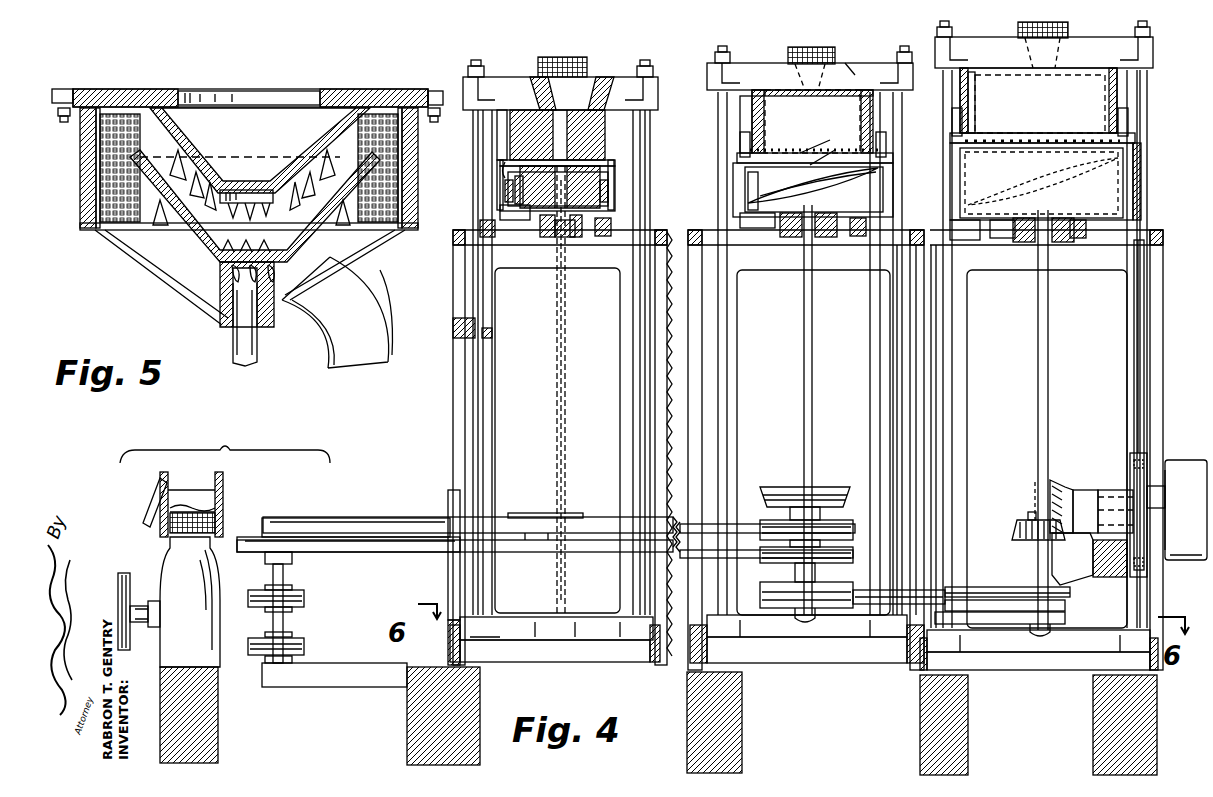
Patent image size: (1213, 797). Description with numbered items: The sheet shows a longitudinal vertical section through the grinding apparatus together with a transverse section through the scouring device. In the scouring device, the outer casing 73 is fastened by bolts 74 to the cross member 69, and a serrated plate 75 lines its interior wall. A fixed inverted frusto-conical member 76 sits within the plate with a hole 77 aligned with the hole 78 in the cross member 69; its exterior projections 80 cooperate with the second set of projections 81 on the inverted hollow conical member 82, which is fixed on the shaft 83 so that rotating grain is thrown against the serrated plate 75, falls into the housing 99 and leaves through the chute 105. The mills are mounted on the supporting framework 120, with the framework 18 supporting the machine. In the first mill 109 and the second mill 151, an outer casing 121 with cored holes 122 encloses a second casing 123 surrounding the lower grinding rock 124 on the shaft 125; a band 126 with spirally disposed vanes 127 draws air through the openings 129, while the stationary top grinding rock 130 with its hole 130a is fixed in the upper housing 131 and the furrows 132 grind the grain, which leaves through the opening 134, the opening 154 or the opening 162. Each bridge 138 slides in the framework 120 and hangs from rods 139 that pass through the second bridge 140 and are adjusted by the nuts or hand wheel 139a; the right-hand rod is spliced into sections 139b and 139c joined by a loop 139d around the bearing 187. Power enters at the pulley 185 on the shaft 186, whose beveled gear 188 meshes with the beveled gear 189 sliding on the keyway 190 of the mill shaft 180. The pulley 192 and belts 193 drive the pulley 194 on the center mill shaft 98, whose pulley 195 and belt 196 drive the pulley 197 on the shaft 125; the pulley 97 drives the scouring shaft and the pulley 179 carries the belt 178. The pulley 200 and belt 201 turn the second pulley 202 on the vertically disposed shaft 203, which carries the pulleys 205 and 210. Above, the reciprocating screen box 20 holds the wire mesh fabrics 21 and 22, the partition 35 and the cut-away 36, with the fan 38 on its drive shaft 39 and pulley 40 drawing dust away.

In FIG. 5, the cross member 69 is at (377, 92).
In FIG. 5, the hole 78 is at (283, 95).
In FIG. 5, the bolts 74 is at (60, 123).
In FIG. 5, the outer casing 73 is at (82, 162).
In FIG. 5, the serrated plate 75 is at (100, 182).
In FIG. 5, the fixed inverted frustrated conical member 76 is at (255, 185).
In FIG. 5, the hole 77 is at (248, 191).
In FIG. 5, the projections 80 is at (168, 175).
In FIG. 5, the second set of projections 81 is at (257, 234).
In FIG. 5, the housing 99 is at (172, 276).
In FIG. 5, the inverted hollow conical member 82 is at (288, 255).
In FIG. 5, the shaft 83 is at (233, 342).
In FIG. 5, the chute 105 is at (366, 280).
In FIG. 4, the supporting framework 120 is at (453, 268).
In FIG. 4, the vertically disposed rods 139 is at (483, 380).
In FIG. 4, the second bridge 140 is at (620, 60).
In FIG. 4, the nuts or hand wheel 139a is at (470, 66).
In FIG. 4, the second mill 151 is at (855, 58).
In FIG. 4, the hole 130a is at (807, 117).
In FIG. 4, the stationary top grinding rock 130 is at (1158, 85).
In FIG. 4, the upper housing 131 is at (730, 114).
In FIG. 4, the openings 129 is at (836, 147).
In FIG. 4, the furrows 132 is at (819, 162).
In FIG. 4, the outer casing 121 is at (737, 157).
In FIG. 4, the cored holes 122 is at (500, 176).
In FIG. 4, the second casing 123 is at (612, 166).
In FIG. 4, the spirally disposed vanes 127 is at (505, 188).
In FIG. 4, the band 126 is at (515, 196).
In FIG. 4, the first mill 109 is at (500, 165).
In FIG. 4, the opening 134 is at (512, 225).
In FIG. 4, the lower grinding rock 124 is at (590, 240).
In FIG. 4, the opening 154 is at (768, 228).
In FIG. 4, the opening 162 is at (990, 240).
In FIG. 4, the shaft 125 is at (560, 353).
In FIG. 4, the center mill shaft 98 is at (813, 390).
In FIG. 4, the mill shaft 180 is at (1038, 384).
In FIG. 4, the rod section 139b is at (1137, 348).
In FIG. 4, the bridge 138 is at (603, 617).
In FIG. 4, the framework 18 is at (218, 725).
In FIG. 4, the reciprocating screen box 20 is at (223, 484).
In FIG. 4, the wire mesh fabric 21 is at (183, 505).
In FIG. 4, the partition 35 is at (198, 505).
In FIG. 4, the wire mesh fabric 22 is at (217, 522).
In FIG. 4, the cut-away portion 36 is at (146, 507).
In FIG. 4, the fan 38 is at (190, 602).
In FIG. 4, the pulley 40 is at (135, 565).
In FIG. 4, the drive shaft 39 is at (130, 614).
In FIG. 4, the belt 201 is at (383, 552).
In FIG. 4, the second pulley 202 is at (300, 558).
In FIG. 4, the vertically disposed shaft 203 is at (285, 583).
In FIG. 4, the pulley 205 is at (304, 602).
In FIG. 4, the pulley 210 is at (304, 642).
In FIG. 4, the pulley 197 is at (530, 517).
In FIG. 4, the belt 196 is at (680, 522).
In FIG. 4, the pulley 97 is at (825, 485).
In FIG. 4, the pulley 195 is at (853, 522).
In FIG. 4, the pulley 200 is at (845, 562).
In FIG. 4, the pulley 194 is at (767, 585).
In FIG. 4, the beveled gear 188 is at (1058, 480).
In FIG. 4, the beveled gear 189 is at (1017, 528).
In FIG. 4, the keyway 190 is at (1035, 490).
In FIG. 4, the bearing 187 is at (1095, 490).
In FIG. 4, the shaft 186 is at (1108, 490).
In FIG. 4, the pulley 192 is at (1015, 575).
In FIG. 4, the belts 193 is at (968, 588).
In FIG. 4, the belt 178 is at (1090, 605).
In FIG. 4, the pulley 179 is at (1000, 621).
In FIG. 4, the rod section 139c is at (1147, 598).
In FIG. 4, the loop 139d is at (1155, 508).
In FIG. 4, the pulley 185 is at (1190, 460).